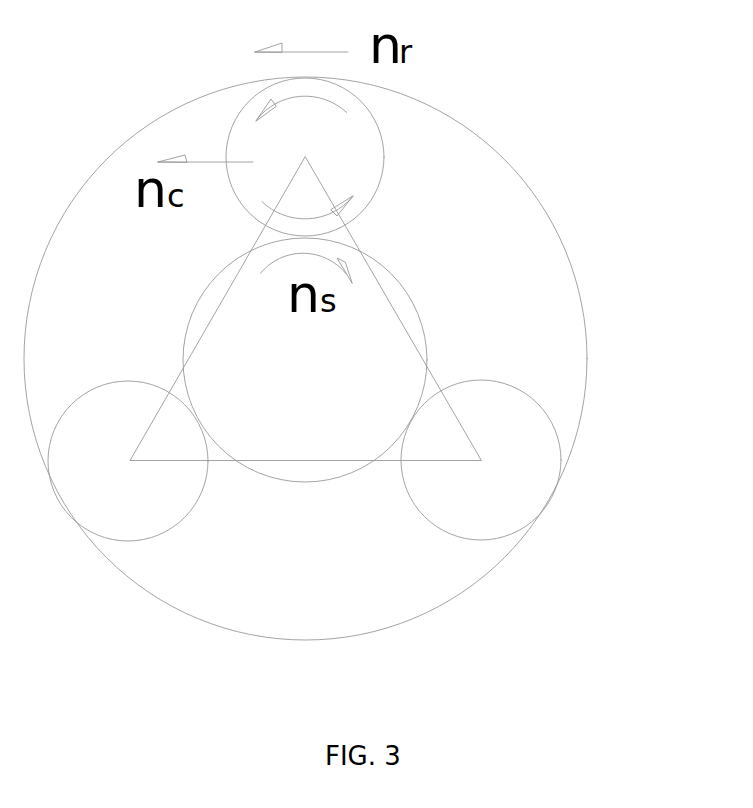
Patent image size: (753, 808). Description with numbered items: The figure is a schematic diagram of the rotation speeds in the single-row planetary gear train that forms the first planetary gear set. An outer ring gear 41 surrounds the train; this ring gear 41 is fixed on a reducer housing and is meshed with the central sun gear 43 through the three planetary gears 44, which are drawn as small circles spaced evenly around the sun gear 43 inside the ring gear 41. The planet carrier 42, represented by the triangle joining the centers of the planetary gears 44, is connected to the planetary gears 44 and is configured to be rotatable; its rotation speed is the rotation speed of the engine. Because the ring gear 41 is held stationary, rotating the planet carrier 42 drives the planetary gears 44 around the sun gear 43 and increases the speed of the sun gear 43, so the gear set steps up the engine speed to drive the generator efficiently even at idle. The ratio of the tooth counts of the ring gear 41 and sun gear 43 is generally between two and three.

The ring gear 41 is at (533, 192).
The planet carrier 42 is at (315, 172).
The sun gear 43 is at (425, 333).
The planetary gears 44 is at (543, 408).